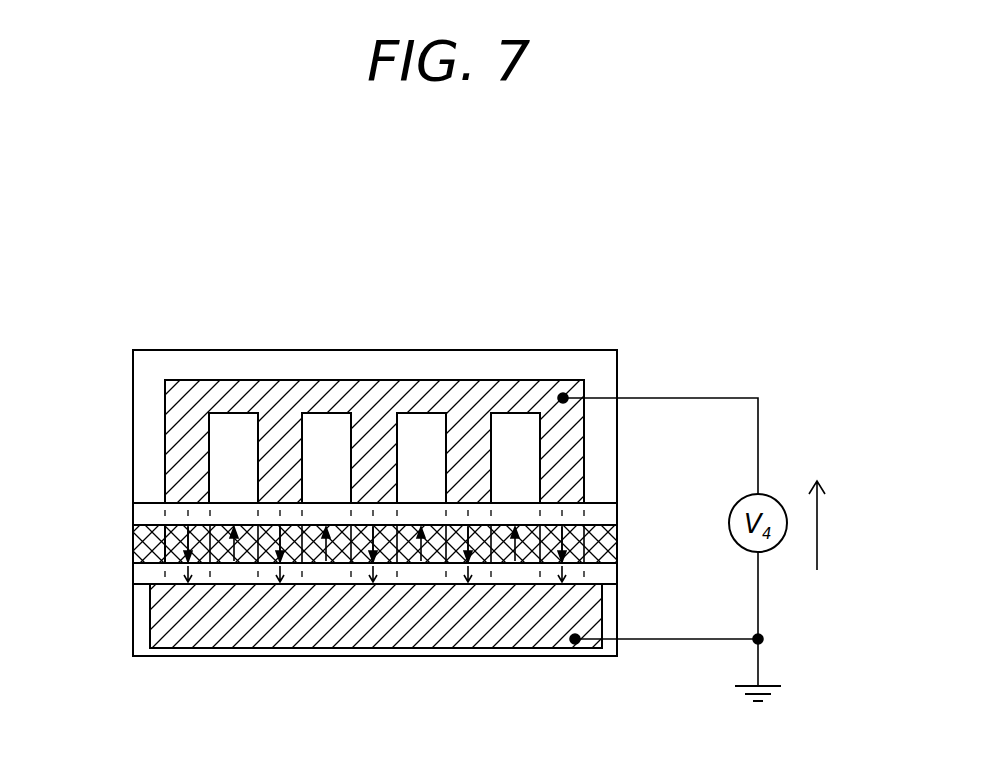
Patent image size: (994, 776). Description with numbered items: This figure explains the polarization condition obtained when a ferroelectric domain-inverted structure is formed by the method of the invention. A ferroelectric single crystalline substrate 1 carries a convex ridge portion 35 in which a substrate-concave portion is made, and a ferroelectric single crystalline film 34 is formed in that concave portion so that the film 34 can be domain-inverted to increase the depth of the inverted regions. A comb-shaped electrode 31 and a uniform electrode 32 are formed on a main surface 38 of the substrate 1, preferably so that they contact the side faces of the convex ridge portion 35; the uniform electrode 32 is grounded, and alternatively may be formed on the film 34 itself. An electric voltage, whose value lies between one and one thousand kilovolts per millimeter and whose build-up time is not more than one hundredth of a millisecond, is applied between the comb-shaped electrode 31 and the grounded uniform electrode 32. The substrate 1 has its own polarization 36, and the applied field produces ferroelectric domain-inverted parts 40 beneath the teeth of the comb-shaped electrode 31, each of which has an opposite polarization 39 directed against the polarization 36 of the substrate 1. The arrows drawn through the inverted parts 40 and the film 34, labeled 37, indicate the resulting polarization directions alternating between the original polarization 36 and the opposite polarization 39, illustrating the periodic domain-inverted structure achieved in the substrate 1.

The ferroelectric single crystalline substrate 1 is at (133, 412).
The comb-shaped electrode 31 is at (525, 388).
The uniform electrode 32 is at (523, 618).
The ferroelectric single crystalline film 34 is at (605, 545).
The convex ridge portion 35 is at (600, 518).
The polarization 36 is at (850, 525).
The electric field lines 37 is at (240, 560).
The main surface 38 is at (593, 367).
The opposite polarization 39 is at (135, 555).
The ferroelectric domain-inverted parts 40 is at (133, 533).